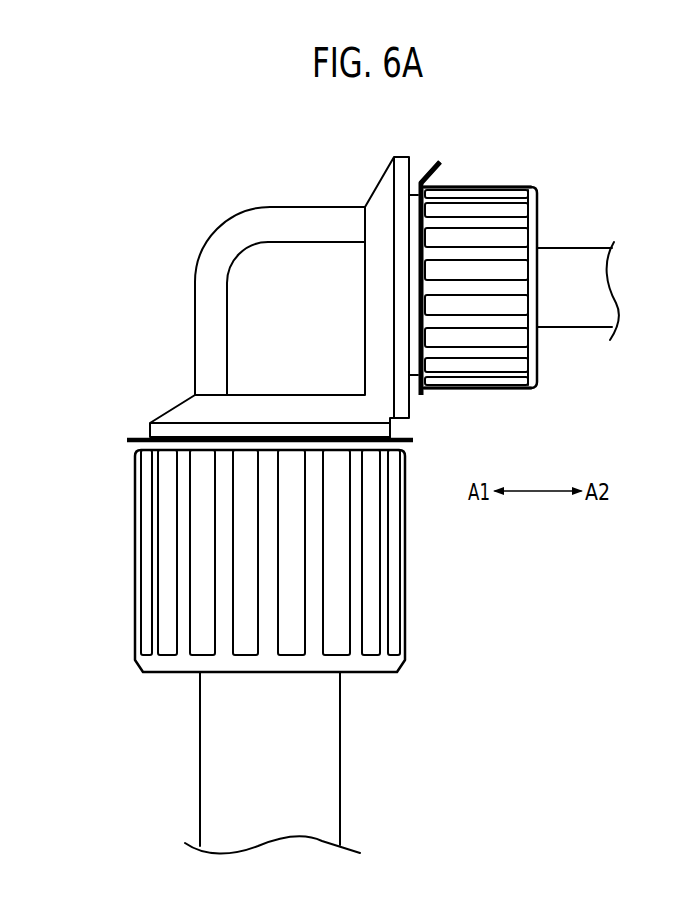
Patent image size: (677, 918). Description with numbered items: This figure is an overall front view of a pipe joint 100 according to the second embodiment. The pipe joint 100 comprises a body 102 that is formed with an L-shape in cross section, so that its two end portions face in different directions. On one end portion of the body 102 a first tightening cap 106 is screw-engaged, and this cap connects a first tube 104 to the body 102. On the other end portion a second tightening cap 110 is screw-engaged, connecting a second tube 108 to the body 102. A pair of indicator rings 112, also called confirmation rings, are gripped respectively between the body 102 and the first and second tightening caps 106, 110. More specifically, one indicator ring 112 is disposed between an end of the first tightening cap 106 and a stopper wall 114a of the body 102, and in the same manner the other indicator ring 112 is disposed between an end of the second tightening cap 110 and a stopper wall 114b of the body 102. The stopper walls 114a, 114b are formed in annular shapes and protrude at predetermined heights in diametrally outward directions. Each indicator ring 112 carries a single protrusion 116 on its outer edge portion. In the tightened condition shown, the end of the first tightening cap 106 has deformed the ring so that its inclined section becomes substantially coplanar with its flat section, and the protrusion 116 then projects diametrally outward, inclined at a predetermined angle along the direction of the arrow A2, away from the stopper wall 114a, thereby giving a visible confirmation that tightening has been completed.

The pipe joint 100 is at (169, 149).
The body 102 is at (183, 248).
The first tube 104 is at (570, 265).
The first tightening cap 106 is at (503, 178).
The second tube 108 is at (320, 748).
The second tightening cap 110 is at (125, 555).
The indicator ring 112 is at (445, 154).
The stopper wall 114a is at (400, 163).
The stopper wall 114b is at (166, 432).
The protrusion 116 is at (421, 180).